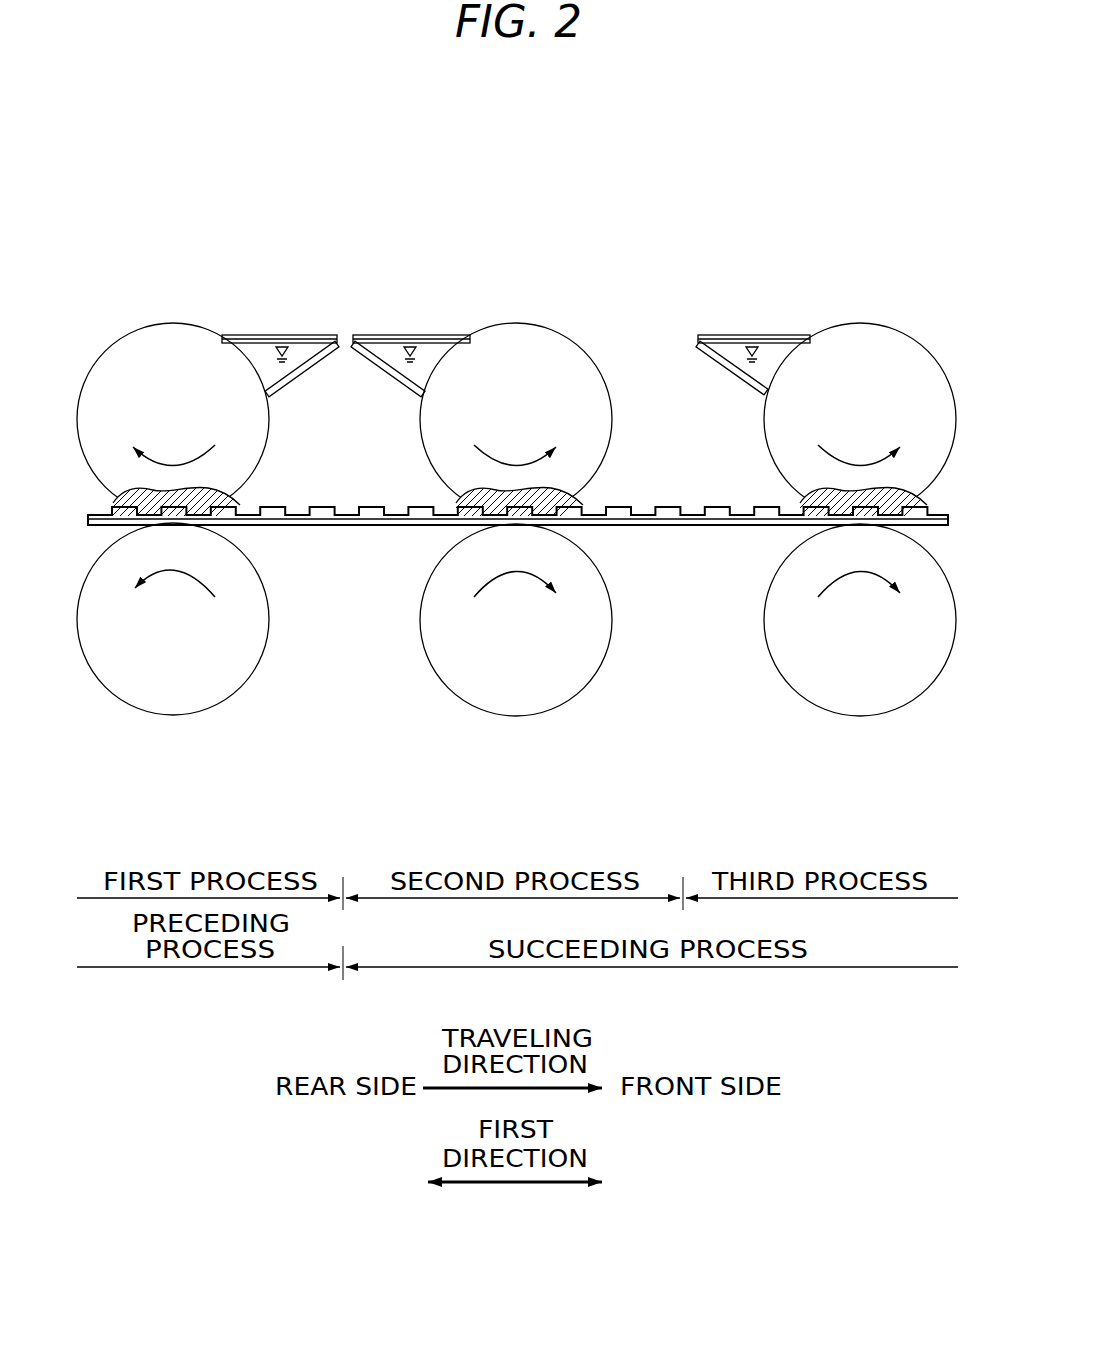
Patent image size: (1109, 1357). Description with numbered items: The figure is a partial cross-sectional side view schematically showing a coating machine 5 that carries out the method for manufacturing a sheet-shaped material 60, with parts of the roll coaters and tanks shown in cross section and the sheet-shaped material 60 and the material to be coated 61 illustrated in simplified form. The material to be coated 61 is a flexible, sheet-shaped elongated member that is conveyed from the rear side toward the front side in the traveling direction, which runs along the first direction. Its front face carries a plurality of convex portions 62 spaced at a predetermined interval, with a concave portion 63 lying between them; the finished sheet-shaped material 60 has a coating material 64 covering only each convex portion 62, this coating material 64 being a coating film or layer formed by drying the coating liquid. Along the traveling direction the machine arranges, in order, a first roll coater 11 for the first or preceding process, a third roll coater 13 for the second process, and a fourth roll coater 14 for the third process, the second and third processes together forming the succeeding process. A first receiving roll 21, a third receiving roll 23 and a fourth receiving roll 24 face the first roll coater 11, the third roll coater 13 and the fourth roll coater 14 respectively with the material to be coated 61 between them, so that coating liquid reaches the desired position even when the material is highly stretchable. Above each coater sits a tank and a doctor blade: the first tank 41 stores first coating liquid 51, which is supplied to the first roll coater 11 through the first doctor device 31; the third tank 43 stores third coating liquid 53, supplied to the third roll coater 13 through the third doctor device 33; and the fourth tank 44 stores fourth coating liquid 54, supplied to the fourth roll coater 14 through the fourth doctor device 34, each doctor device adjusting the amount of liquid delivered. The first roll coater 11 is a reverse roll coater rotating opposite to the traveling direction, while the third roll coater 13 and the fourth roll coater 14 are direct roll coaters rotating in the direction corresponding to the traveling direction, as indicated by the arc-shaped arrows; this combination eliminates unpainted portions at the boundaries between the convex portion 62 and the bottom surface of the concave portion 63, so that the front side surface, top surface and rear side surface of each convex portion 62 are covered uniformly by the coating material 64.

The coating machine 5 is at (517, 172).
The first roll coater 11 is at (110, 340).
The third roll coater 13 is at (577, 345).
The fourth roll coater 14 is at (918, 345).
The first receiving roll 21 is at (173, 716).
The third receiving roll 23 is at (516, 716).
The fourth receiving roll 24 is at (860, 716).
The first doctor device 31 is at (300, 378).
The third doctor device 33 is at (372, 378).
The fourth doctor device 34 is at (712, 378).
The first tank 41 is at (277, 338).
The third tank 43 is at (420, 336).
The fourth tank 44 is at (757, 336).
The first coating liquid 51 is at (248, 338).
The third coating liquid 53 is at (433, 336).
The fourth coating liquid 54 is at (777, 336).
The sheet-shaped material 60 is at (948, 532).
The material to be coated 61 is at (345, 527).
The convex portion 62 is at (717, 513).
The concave portion 63 is at (688, 512).
The coating material 64 is at (965, 525).